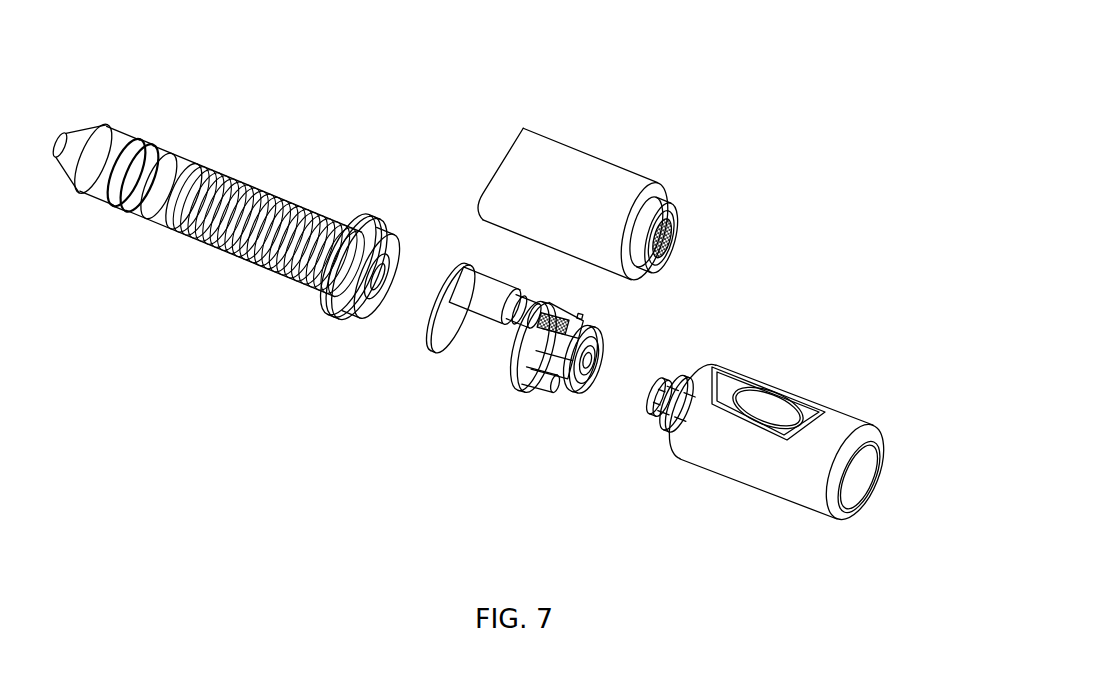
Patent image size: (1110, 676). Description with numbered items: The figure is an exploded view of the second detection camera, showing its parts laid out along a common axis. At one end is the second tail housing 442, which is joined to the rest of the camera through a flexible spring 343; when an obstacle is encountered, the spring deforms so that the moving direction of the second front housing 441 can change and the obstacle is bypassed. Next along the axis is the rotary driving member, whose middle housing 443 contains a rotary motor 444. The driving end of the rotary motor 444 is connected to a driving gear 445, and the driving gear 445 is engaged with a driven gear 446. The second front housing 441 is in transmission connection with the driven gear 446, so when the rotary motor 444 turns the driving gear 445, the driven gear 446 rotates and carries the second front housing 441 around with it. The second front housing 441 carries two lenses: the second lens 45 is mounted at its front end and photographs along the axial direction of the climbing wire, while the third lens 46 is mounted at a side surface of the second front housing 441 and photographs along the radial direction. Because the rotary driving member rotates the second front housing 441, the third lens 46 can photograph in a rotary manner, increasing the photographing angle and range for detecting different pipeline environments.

The flexible spring 343 is at (233, 247).
The second front housing 441 is at (758, 470).
The second tail housing 442 is at (148, 160).
The middle housing 443 is at (588, 177).
The rotary motor 444 is at (485, 308).
The driving gear 445 is at (556, 382).
The driven gear 446 is at (673, 380).
The third lens 46 is at (763, 405).
The second lens 45 is at (858, 480).